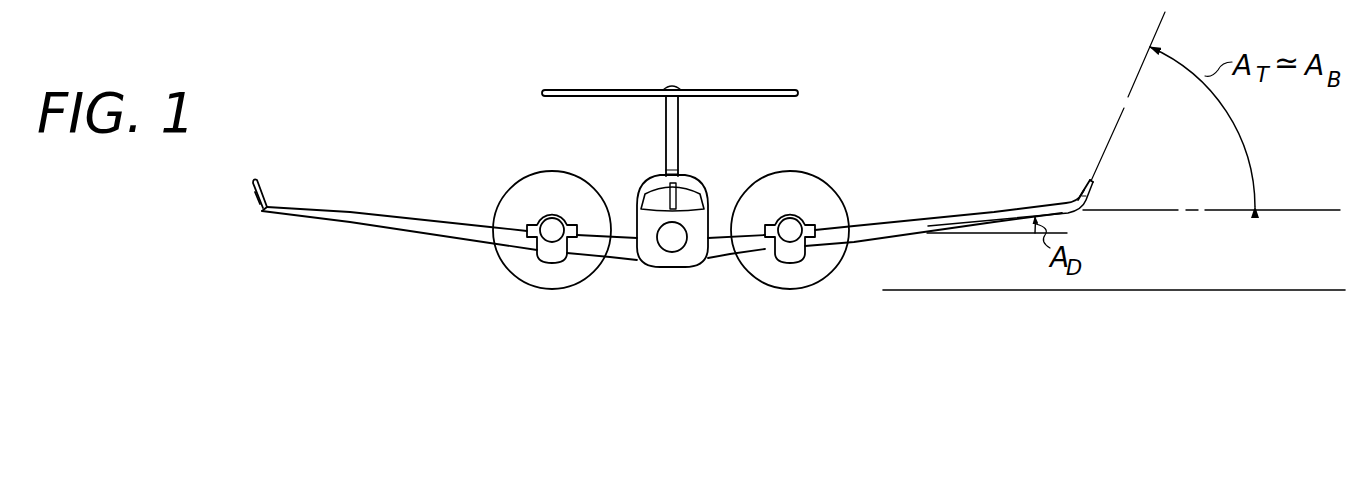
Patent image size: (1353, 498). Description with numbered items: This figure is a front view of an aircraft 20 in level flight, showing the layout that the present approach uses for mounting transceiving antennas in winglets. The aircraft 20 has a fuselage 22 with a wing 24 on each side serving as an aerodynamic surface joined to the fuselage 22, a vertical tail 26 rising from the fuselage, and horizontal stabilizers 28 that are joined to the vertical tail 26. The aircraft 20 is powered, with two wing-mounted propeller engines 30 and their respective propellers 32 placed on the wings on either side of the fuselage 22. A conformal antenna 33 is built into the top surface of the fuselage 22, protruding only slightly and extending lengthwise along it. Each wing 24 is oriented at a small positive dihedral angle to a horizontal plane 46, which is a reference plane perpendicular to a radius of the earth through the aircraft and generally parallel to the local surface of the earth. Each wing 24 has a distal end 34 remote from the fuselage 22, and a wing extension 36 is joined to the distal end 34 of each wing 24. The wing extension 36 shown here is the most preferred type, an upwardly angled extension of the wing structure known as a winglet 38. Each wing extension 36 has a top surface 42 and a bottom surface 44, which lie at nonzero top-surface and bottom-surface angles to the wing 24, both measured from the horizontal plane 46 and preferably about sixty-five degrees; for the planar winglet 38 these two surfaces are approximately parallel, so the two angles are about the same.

The aircraft 20 is at (397, 147).
The fuselage 22 is at (650, 180).
The wing 24 is at (437, 237).
The vertical tail 26 is at (679, 123).
The horizontal stabilizers 28 is at (570, 89).
The propeller engines 30 is at (552, 217).
The propellers 32 is at (522, 277).
The conformal antenna 33 is at (677, 172).
The distal end 34 is at (262, 209).
The wing extension 36 is at (240, 181).
The winglet 38 is at (254, 193).
The top surface 42 is at (1082, 192).
The bottom surface 44 is at (1093, 185).
The horizontal plane 46 is at (1125, 290).